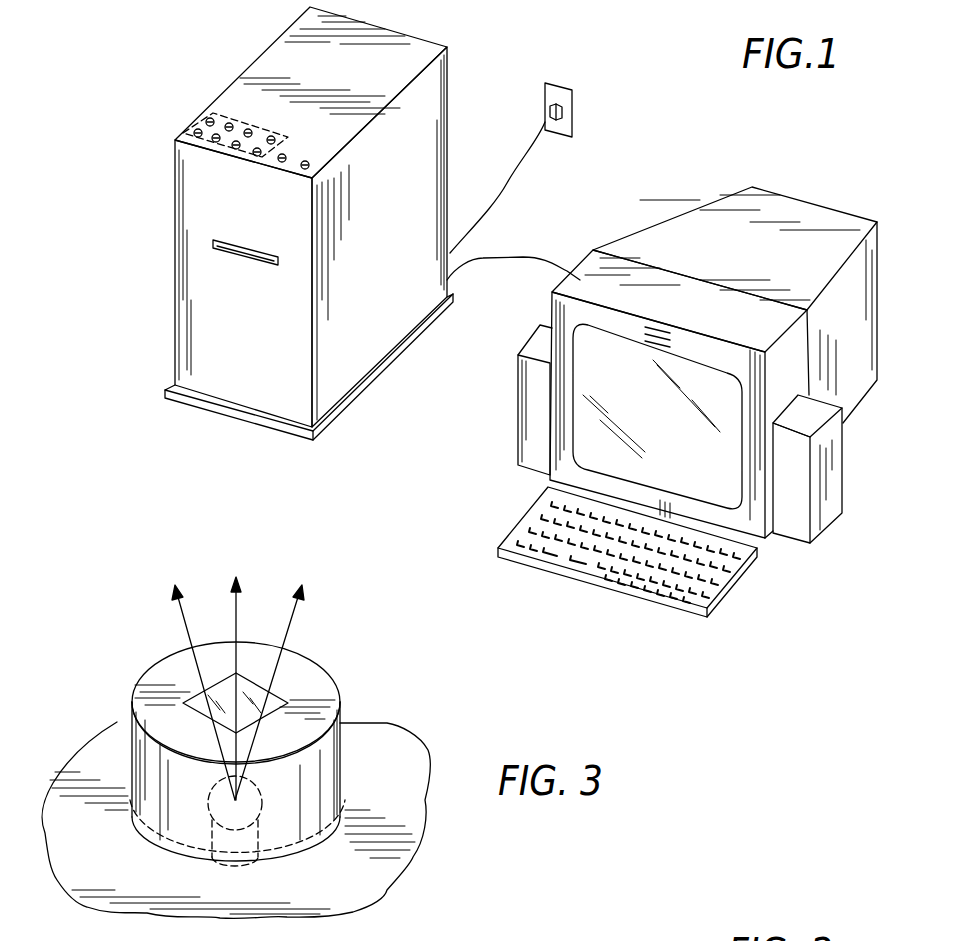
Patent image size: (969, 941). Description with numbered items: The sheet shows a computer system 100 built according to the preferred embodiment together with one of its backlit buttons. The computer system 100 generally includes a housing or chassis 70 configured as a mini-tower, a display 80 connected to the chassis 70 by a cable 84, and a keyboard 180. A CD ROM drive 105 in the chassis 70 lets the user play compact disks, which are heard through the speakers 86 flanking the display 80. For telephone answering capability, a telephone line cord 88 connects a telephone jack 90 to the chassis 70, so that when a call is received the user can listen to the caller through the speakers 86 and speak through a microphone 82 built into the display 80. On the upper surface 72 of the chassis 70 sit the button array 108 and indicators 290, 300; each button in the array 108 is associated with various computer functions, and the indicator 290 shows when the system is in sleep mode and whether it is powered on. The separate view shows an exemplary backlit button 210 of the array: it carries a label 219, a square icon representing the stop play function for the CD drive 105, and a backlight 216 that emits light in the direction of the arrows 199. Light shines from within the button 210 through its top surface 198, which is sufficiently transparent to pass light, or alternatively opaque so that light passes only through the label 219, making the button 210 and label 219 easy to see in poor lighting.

In FIG. 1, the computer system 100 is at (270, 223).
In FIG. 1, the chassis 70 is at (270, 243).
In FIG. 1, the upper surface 72 is at (237, 97).
In FIG. 1, the button array 108 is at (193, 120).
In FIG. 1, the indicator 290 is at (286, 155).
In FIG. 1, the indicator 300 is at (309, 166).
In FIG. 1, the CD ROM drive 105 is at (252, 262).
In FIG. 1, the telephone jack 90 is at (572, 102).
In FIG. 1, the telephone line cord 88 is at (510, 181).
In FIG. 1, the cable 84 is at (517, 262).
In FIG. 1, the display 80 is at (713, 343).
In FIG. 1, the microphone 82 is at (660, 327).
In FIG. 1, the speakers 86 is at (525, 437).
In FIG. 1, the keyboard 180 is at (690, 580).
In FIG. 3, the backlit button 210 is at (116, 692).
In FIG. 3, the top surface 198 is at (155, 682).
In FIG. 3, the arrows 199 is at (233, 607).
In FIG. 3, the label 219 is at (278, 695).
In FIG. 3, the backlight 216 is at (260, 798).